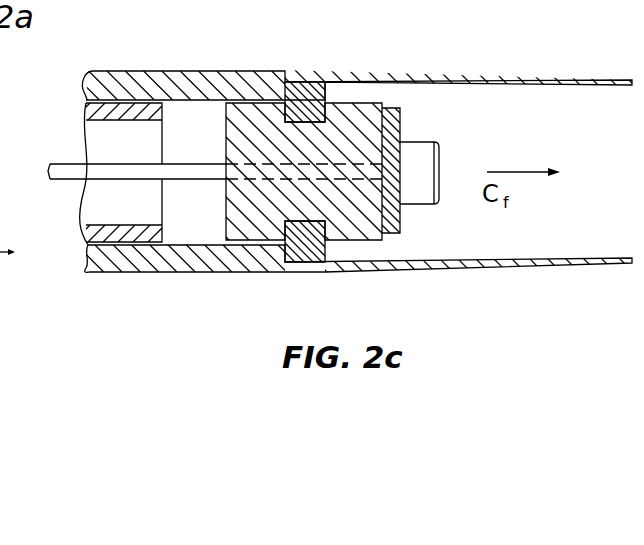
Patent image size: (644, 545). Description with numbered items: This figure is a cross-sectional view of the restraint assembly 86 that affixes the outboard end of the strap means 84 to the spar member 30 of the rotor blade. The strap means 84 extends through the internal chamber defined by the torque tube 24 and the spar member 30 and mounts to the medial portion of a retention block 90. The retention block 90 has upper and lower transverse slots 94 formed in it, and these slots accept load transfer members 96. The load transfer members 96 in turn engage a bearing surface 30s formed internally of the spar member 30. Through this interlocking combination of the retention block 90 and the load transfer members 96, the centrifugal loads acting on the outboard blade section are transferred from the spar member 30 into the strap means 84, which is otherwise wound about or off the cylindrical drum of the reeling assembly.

The spar member 30 is at (178, 75).
The bearing surface 30s is at (289, 88).
The load transfer members 96 is at (312, 87).
The torque tube 24 is at (132, 235).
The strap means 84 is at (189, 173).
The retention block 90 is at (232, 198).
The transverse slots 94 is at (316, 126).
The restraint assembly 86 is at (449, 119).